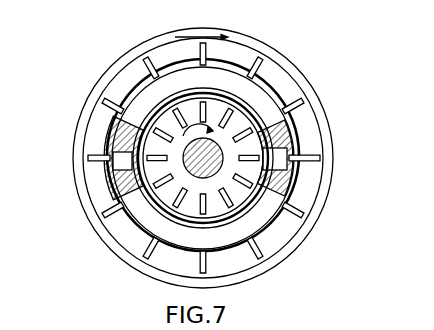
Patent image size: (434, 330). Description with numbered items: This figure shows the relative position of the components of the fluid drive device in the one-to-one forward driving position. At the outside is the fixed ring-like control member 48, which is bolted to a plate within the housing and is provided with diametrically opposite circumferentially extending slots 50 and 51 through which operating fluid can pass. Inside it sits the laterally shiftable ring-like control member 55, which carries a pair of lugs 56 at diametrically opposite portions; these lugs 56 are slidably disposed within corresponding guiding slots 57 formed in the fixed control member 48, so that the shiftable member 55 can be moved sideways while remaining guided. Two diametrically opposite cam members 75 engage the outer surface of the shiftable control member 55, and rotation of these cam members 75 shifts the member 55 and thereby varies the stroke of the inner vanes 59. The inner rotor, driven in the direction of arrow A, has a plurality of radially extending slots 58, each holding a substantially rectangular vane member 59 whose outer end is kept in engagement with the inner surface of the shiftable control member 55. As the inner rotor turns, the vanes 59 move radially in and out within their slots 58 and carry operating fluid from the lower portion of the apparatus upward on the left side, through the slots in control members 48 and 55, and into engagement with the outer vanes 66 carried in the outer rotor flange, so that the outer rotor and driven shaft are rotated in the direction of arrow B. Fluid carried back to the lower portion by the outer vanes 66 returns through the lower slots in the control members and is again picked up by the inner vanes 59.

The ring-like control member 48 is at (268, 93).
The slot 50 is at (165, 77).
The slot 51 is at (238, 244).
The shiftable control member 55 is at (117, 213).
The lug 56 is at (108, 138).
The guiding slot 57 is at (322, 160).
The slot 58 is at (184, 170).
The vane member 59 is at (178, 118).
The outer vane 66 is at (248, 62).
The cam member 75 is at (115, 182).